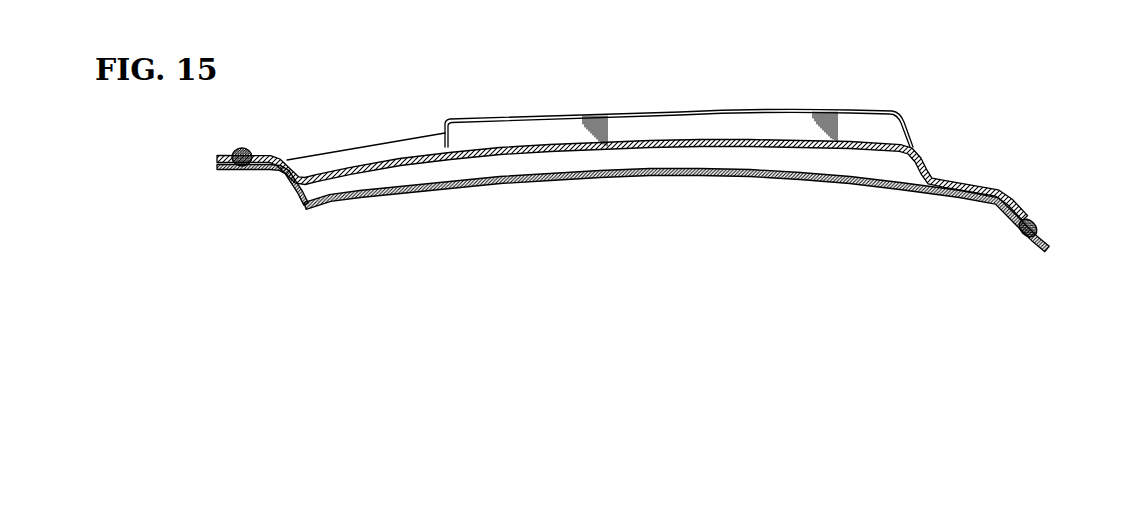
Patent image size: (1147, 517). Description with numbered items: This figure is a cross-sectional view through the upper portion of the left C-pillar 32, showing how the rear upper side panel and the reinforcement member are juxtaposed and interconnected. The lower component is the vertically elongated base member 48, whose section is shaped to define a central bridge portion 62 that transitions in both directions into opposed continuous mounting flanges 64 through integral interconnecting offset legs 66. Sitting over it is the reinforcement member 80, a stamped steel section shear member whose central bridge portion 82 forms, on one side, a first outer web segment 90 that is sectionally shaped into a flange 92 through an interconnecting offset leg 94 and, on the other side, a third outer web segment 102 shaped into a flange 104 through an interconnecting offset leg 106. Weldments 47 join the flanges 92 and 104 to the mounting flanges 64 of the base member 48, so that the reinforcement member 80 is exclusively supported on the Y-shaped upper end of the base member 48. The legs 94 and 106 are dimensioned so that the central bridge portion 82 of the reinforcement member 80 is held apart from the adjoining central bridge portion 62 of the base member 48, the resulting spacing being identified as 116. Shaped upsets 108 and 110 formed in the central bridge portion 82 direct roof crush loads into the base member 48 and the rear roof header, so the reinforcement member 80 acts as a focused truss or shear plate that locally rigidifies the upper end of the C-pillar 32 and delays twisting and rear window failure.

The C-pillar 32 is at (1056, 120).
The weldments 47 is at (238, 149).
The base member 48 is at (548, 186).
The central bridge portion 62 is at (684, 183).
The mounting flanges 64 is at (222, 170).
The offset legs 66 is at (293, 193).
The reinforcement member 80 is at (679, 86).
The central bridge portion 82 is at (627, 140).
The first outer web segment 90 is at (296, 141).
The flanges 92 is at (220, 156).
The offset leg 94 is at (281, 149).
The third outer web segment 102 is at (985, 180).
The flanges 104 is at (1008, 198).
The offset leg 106 is at (926, 165).
The shaped upset 108 is at (843, 123).
The shaped upset 110 is at (418, 142).
The space 116 is at (746, 163).